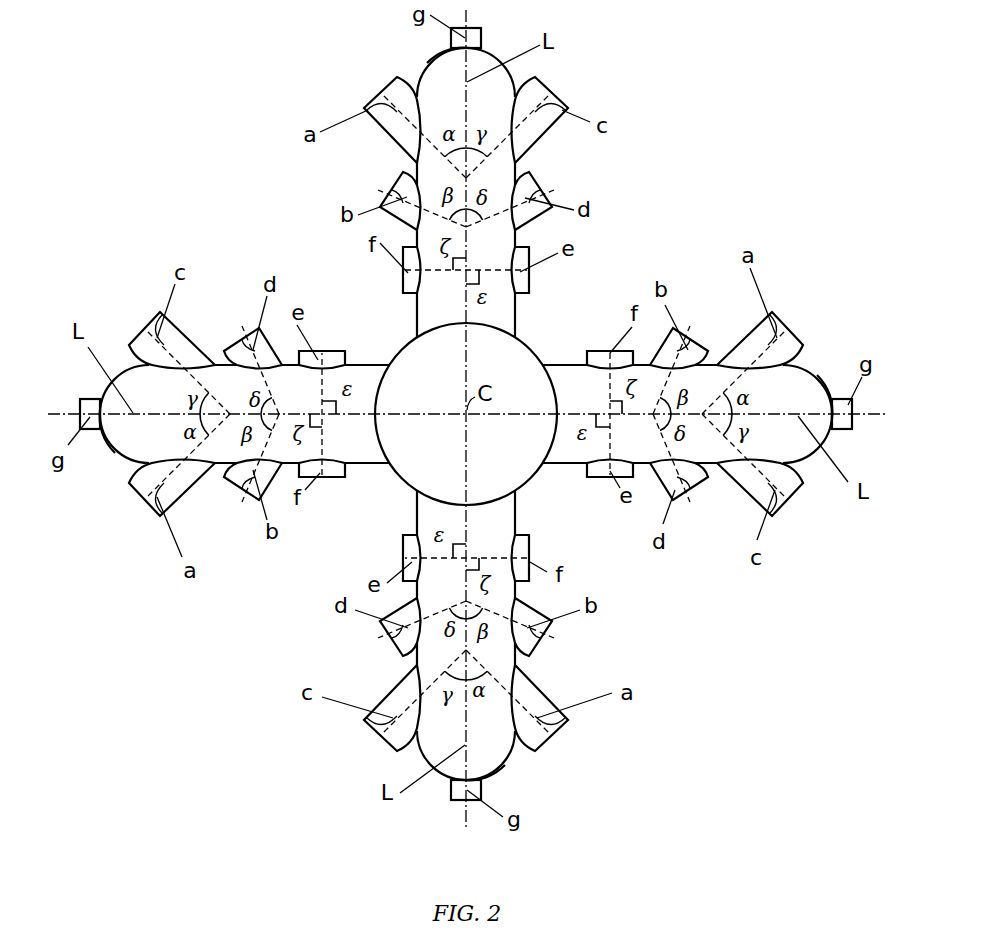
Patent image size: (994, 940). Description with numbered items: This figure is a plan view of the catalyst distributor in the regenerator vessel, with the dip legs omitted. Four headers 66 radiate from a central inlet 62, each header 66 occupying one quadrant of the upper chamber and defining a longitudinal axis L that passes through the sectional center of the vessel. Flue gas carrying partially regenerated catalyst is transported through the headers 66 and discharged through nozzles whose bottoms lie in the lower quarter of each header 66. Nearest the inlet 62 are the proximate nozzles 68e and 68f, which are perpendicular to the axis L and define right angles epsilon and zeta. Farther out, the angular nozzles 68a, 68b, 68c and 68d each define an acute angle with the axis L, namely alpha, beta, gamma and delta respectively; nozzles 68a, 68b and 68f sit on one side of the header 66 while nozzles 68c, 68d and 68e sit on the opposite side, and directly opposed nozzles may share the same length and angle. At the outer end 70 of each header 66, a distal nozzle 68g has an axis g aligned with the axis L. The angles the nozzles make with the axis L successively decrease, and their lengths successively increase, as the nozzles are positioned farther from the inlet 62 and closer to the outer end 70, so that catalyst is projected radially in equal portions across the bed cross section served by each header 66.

The inlet 62 is at (557, 411).
The header 66 is at (447, 308).
The angular nozzle 68a is at (370, 103).
The nozzle 68b is at (400, 176).
The nozzle 68c is at (566, 101).
The nozzle 68d is at (535, 180).
The proximate nozzle 68e is at (528, 278).
The proximate nozzle 68f is at (404, 281).
The distal nozzle 68g is at (476, 30).
The outer end 70 is at (430, 62).